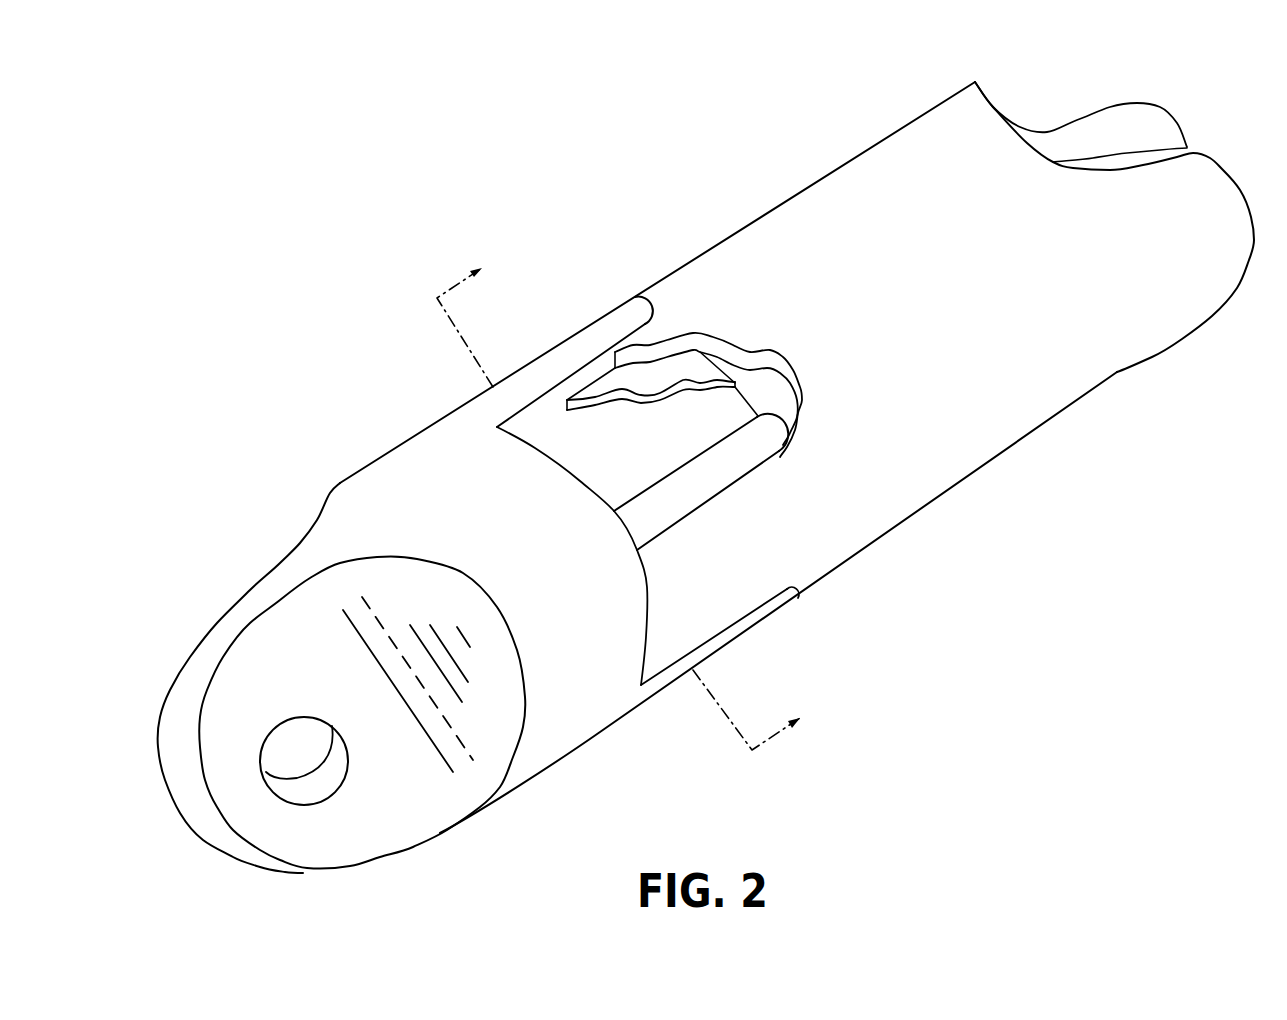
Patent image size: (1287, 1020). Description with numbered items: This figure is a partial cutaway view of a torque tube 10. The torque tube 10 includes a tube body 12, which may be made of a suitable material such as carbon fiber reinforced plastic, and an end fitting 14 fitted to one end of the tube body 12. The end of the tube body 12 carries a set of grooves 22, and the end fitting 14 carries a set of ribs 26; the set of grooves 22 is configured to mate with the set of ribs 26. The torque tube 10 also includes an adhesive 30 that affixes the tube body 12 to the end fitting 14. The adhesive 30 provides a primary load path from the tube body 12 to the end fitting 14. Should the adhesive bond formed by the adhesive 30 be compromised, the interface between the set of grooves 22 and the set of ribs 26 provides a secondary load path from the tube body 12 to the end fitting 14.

The torque tube 10 is at (486, 143).
The tube body 12 is at (765, 217).
The end fitting 14 is at (355, 445).
The set of grooves 22 is at (622, 278).
The set of ribs 26 is at (542, 362).
The adhesive 30 is at (668, 372).